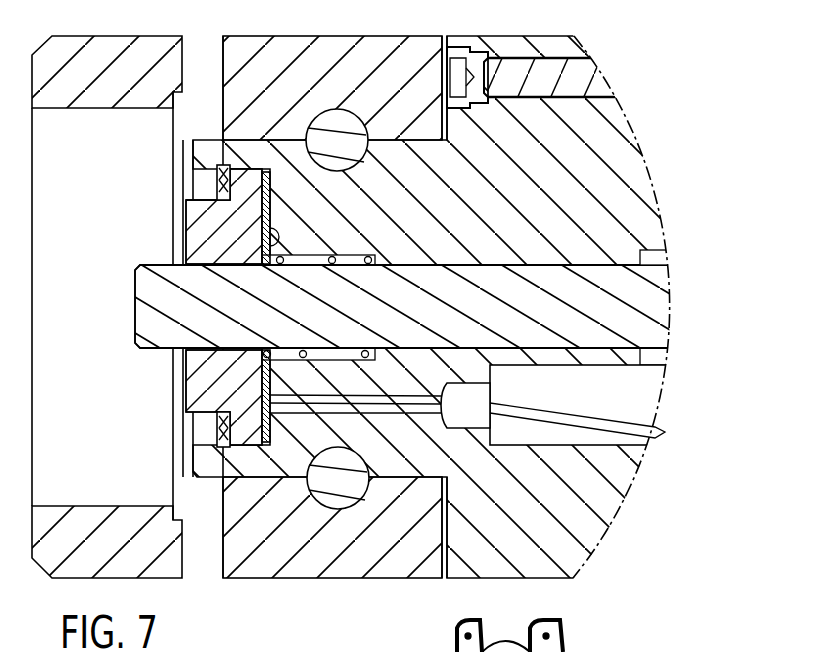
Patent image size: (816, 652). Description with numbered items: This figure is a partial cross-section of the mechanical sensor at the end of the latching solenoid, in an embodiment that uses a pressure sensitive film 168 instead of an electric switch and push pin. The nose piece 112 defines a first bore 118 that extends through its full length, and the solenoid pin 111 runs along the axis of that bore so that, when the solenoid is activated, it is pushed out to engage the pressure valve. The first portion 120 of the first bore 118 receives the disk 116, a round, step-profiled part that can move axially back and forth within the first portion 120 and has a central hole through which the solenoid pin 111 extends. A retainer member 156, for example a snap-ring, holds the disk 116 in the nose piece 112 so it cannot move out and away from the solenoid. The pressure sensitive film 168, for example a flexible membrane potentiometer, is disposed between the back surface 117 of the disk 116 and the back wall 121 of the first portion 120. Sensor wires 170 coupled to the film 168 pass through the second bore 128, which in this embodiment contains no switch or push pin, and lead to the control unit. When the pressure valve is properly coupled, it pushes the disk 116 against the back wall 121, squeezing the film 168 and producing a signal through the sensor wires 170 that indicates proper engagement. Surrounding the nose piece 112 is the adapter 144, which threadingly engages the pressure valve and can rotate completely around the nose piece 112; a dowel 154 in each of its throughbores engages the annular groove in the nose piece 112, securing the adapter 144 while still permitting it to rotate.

The solenoid pin 111 is at (637, 318).
The nose piece 112 is at (575, 520).
The disk 116 is at (200, 390).
The back surface 117 is at (285, 242).
The first bore 118 is at (620, 262).
The first portion 120 is at (203, 183).
The back wall 121 is at (286, 204).
The second bore 128 is at (610, 455).
The adapter 144 is at (275, 48).
The dowel 154 is at (337, 115).
The retainer member 156 is at (200, 196).
The pressure sensitive film 168 is at (265, 385).
The sensor wires 170 is at (665, 432).